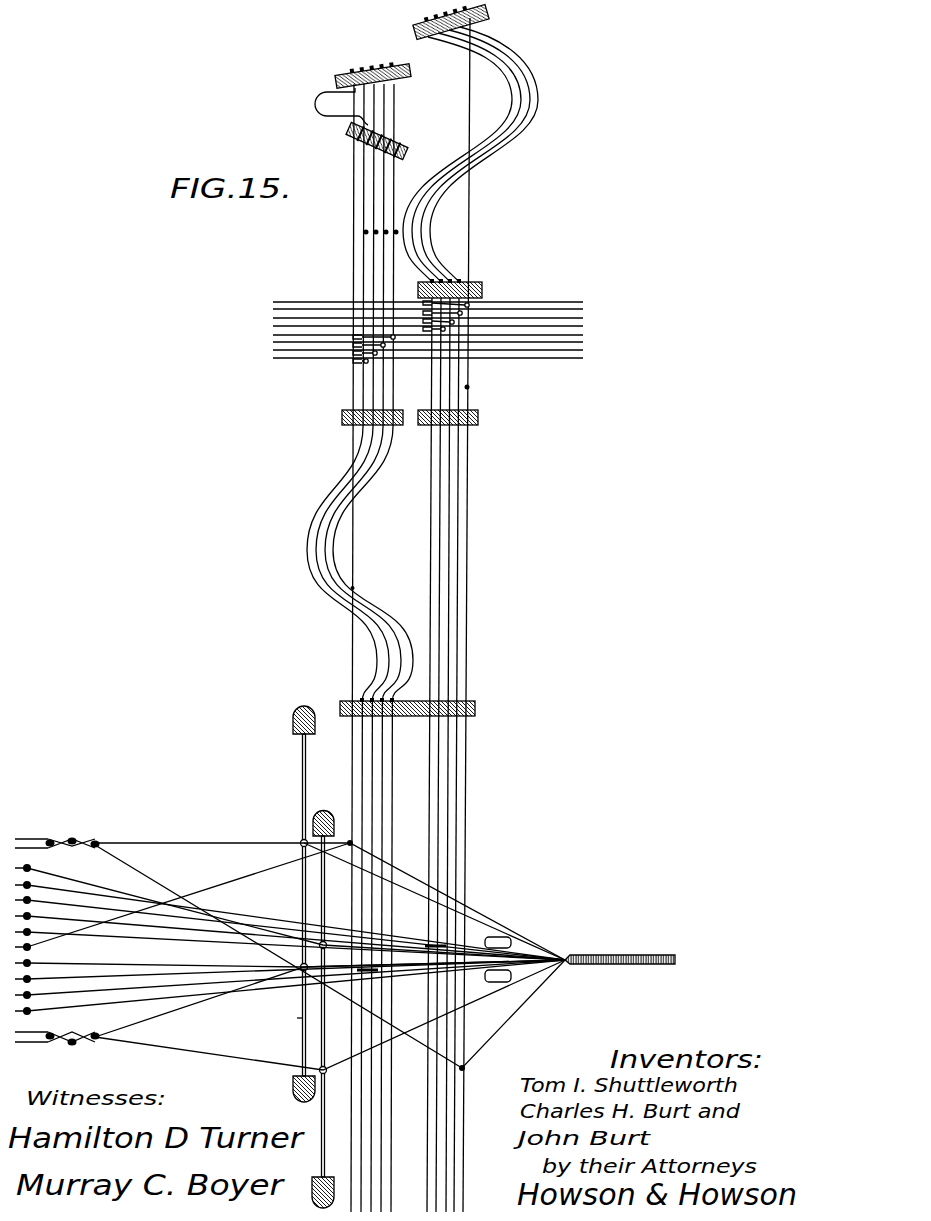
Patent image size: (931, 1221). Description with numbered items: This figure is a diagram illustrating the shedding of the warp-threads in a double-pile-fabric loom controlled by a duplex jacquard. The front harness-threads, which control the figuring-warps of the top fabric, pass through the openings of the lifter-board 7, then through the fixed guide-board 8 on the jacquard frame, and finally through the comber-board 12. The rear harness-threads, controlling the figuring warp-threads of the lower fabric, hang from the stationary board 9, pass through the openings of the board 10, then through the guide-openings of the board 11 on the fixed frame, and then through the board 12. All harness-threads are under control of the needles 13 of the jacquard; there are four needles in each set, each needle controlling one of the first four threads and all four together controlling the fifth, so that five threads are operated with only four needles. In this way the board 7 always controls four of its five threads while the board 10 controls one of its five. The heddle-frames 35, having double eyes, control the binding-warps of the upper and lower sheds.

The lifter-board 7 is at (457, 288).
The fixed guide-board 8 is at (456, 419).
The stationary board 9 is at (372, 73).
The board 10 is at (385, 141).
The board 11 is at (362, 418).
The comber-board 12 is at (421, 708).
The needles 13 is at (430, 332).
The heddle-frames 35 is at (311, 957).